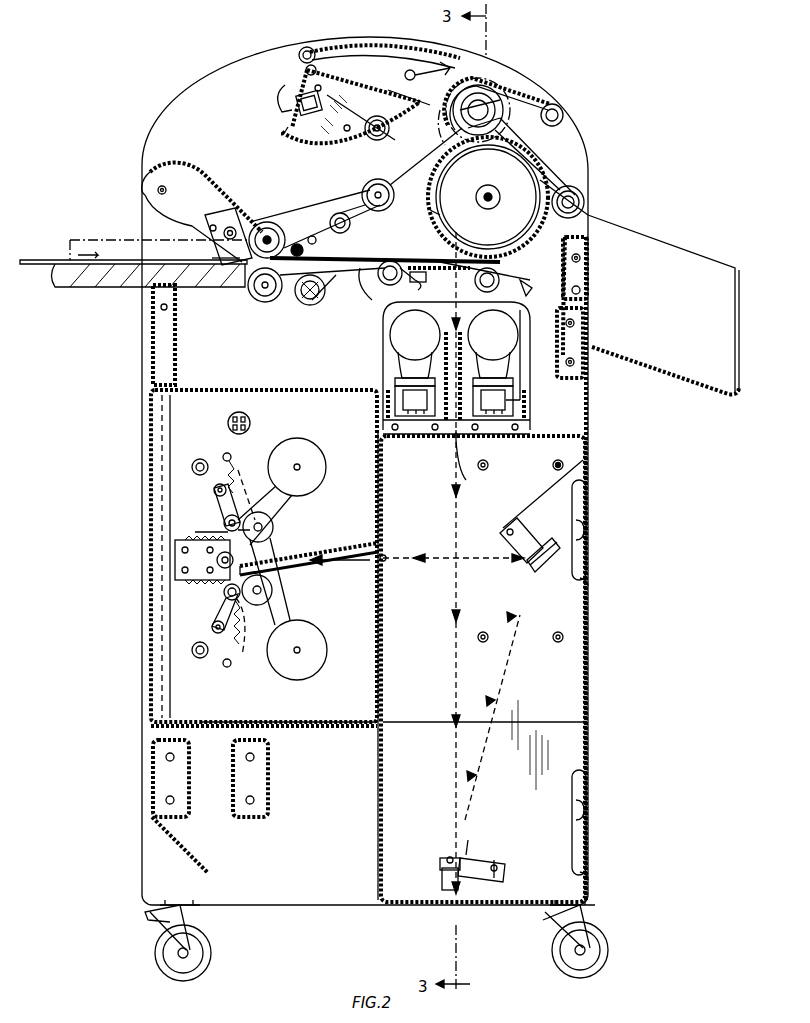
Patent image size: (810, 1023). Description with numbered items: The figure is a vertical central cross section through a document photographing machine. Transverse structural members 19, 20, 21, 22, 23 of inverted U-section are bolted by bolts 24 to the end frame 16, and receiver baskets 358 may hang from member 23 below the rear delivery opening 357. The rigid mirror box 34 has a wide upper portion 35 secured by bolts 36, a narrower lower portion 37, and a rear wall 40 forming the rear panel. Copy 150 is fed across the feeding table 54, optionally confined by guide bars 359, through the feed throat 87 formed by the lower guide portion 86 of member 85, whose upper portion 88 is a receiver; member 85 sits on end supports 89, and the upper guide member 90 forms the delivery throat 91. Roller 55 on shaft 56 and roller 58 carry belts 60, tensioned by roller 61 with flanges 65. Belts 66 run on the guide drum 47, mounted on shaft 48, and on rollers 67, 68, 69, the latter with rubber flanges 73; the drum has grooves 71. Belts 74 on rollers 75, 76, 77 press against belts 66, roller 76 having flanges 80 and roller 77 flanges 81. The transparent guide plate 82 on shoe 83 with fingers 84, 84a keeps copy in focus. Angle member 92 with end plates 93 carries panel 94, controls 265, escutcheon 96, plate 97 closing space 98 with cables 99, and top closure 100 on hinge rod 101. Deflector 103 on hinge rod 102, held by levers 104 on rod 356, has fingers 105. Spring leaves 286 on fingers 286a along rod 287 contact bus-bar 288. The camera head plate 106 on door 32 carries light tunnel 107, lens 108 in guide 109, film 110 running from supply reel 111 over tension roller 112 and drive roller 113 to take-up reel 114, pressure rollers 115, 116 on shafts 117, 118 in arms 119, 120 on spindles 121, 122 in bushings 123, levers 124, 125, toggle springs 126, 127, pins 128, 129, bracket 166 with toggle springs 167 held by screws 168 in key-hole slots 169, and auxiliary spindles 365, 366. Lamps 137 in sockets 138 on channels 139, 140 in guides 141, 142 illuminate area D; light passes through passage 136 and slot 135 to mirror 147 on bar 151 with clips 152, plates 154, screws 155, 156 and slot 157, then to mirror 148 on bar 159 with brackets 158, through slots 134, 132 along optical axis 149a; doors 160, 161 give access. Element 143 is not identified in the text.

The end frame 16 is at (275, 900).
The transverse structural member 19 is at (176, 322).
The transverse structural member 20 is at (188, 815).
The transverse structural member 21 is at (268, 785).
The transverse structural member 22 is at (585, 368).
The transverse structural member 23 is at (590, 278).
The bolt 24 is at (170, 800).
The hinged door 32 is at (148, 647).
The mirror box 34 is at (378, 808).
The upper portion of mirror box 35 is at (580, 455).
The bolt 36 is at (563, 637).
The lower portion of mirror box 37 is at (560, 755).
The rear wall 40 is at (586, 722).
The guide drum 47 is at (409, 227).
The drum shaft 48 is at (492, 192).
The feeding table 54 is at (115, 285).
The transverse roller 55 is at (255, 298).
The roller shaft 56 is at (250, 282).
The second transverse roller 58 is at (385, 280).
The endless belts 60 is at (375, 305).
The tension roller 61 is at (312, 305).
The flange 65 is at (300, 302).
The second set of belts 66 is at (412, 140).
The roller 67 is at (350, 224).
The front roller 68 is at (228, 236).
The discharge roller 69 is at (388, 190).
The groove 71 is at (440, 224).
The rubber flange 73 is at (380, 211).
The third set of belts 74 is at (575, 185).
The roller 75 is at (494, 287).
The middle roller 76 is at (580, 198).
The upper guide roller 77 is at (492, 114).
The belt-spacing flange 80 is at (588, 215).
The rubber discharge flange 81 is at (478, 93).
The transparent guide plate 82 is at (428, 285).
The metallic shoe 83 is at (406, 283).
The guide finger 84 is at (332, 287).
The guide finger 84a is at (500, 272).
The guide member 85 is at (150, 172).
The lower guide portion 86 is at (158, 210).
The feed throat 87 is at (212, 256).
The upper portion 88 is at (195, 180).
The end support 89 is at (225, 205).
The upper guide member 90 is at (290, 140).
The delivery throat 91 is at (352, 172).
The angle member 92 is at (290, 116).
The end plate 93 is at (330, 95).
The panel 94 is at (300, 85).
The escutcheon 96 is at (310, 70).
The plate 97 is at (380, 65).
The elongated space 98 is at (392, 138).
The wiring cable 99 is at (377, 116).
The top closure panel 100 is at (330, 45).
The hinge rod 101 is at (305, 48).
The second hinge rod 102 is at (556, 106).
The deflector 103 is at (482, 70).
The lever 104 is at (427, 65).
The finger 105 is at (446, 128).
The camera head plate 106 is at (322, 720).
The light tunnel 107 is at (318, 543).
The lens 108 is at (302, 545).
The lens mount and film guide 109 is at (240, 565).
The film 110 is at (262, 600).
The supply reel 111 is at (305, 642).
The tension roller 112 is at (270, 597).
The drive roller 113 is at (260, 515).
The take-up reel 114 is at (310, 455).
The pressure roller 115 is at (222, 590).
The pressure roller 116 is at (218, 505).
The shaft 117 is at (222, 598).
The shaft 118 is at (224, 521).
The swinging arm 119 is at (218, 612).
The swinging arm 120 is at (272, 478).
The spindle 121 is at (212, 628).
The spindle 122 is at (213, 490).
The insulated bushing 123 is at (222, 455).
The short lever 124 is at (242, 630).
The short lever 125 is at (257, 495).
The toggle spring 126 is at (242, 660).
The toggle spring 127 is at (236, 470).
The pin 128 is at (228, 667).
The pin 129 is at (231, 456).
The transverse slot 132 is at (366, 562).
The transverse slot 134 is at (386, 558).
The slot 135 is at (452, 440).
The light-shielded passage member 136 is at (476, 464).
The incandescent lamp 137 is at (395, 342).
The socket 138 is at (398, 380).
The channel member 139 is at (514, 390).
The channel member 140 is at (385, 386).
The guide 141 is at (526, 406).
The guide 142 is at (383, 404).
The reflector 143 is at (522, 350).
The mirror 147 is at (440, 862).
The second mirror 148 is at (540, 565).
The optical axis 149a is at (452, 560).
The copy 150 is at (32, 265).
The mounting bar 151 is at (440, 885).
The spring clip 152 is at (448, 857).
The plate 154 is at (495, 855).
The screw 155 is at (465, 858).
The screw 156 is at (500, 866).
The slot 157 is at (500, 875).
The end bracket 158 is at (535, 505).
The mounting bar 159 is at (584, 555).
The light-tight door 160 is at (584, 840).
The light-tight door 161 is at (588, 585).
The bracket 166 is at (178, 548).
The toggle spring 167 is at (195, 532).
The filister-head screw 168 is at (180, 568).
The key-hole slot 169 is at (185, 580).
The control 265 is at (298, 103).
The spring leaf 286 is at (322, 256).
The finger 286a is at (430, 262).
The transverse rod 287 is at (290, 240).
The bus-bar 288 is at (310, 235).
The lever rod 356 is at (408, 48).
The rear delivery opening 357 is at (565, 148).
The receiver basket 358 is at (690, 380).
The guide bar 359 is at (75, 238).
The auxiliary spindle 365 is at (195, 655).
The auxiliary spindle 366 is at (192, 462).
The illuminated area D is at (478, 228).